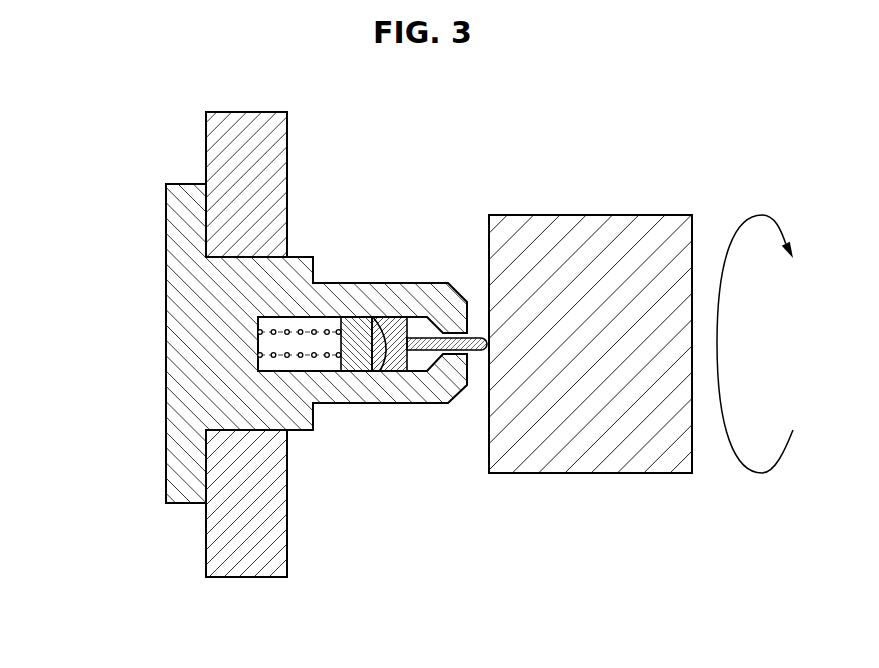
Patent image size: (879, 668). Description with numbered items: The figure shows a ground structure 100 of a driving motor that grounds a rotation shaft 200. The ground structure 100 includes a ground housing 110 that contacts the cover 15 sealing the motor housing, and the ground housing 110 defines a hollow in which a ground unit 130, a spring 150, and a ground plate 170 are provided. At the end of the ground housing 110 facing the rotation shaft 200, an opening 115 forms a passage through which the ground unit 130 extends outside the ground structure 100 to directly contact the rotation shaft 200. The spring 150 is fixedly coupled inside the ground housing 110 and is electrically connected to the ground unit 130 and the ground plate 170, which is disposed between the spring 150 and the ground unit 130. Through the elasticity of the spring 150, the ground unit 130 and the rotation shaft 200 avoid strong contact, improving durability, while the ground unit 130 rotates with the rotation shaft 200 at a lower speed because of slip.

The ground structure 100 is at (146, 159).
The ground housing 110 is at (178, 310).
The cover 15 is at (272, 188).
The opening 115 is at (486, 336).
The ground unit 130 is at (393, 365).
The spring 150 is at (306, 358).
The ground plate 170 is at (352, 367).
The rotation shaft 200 is at (563, 230).